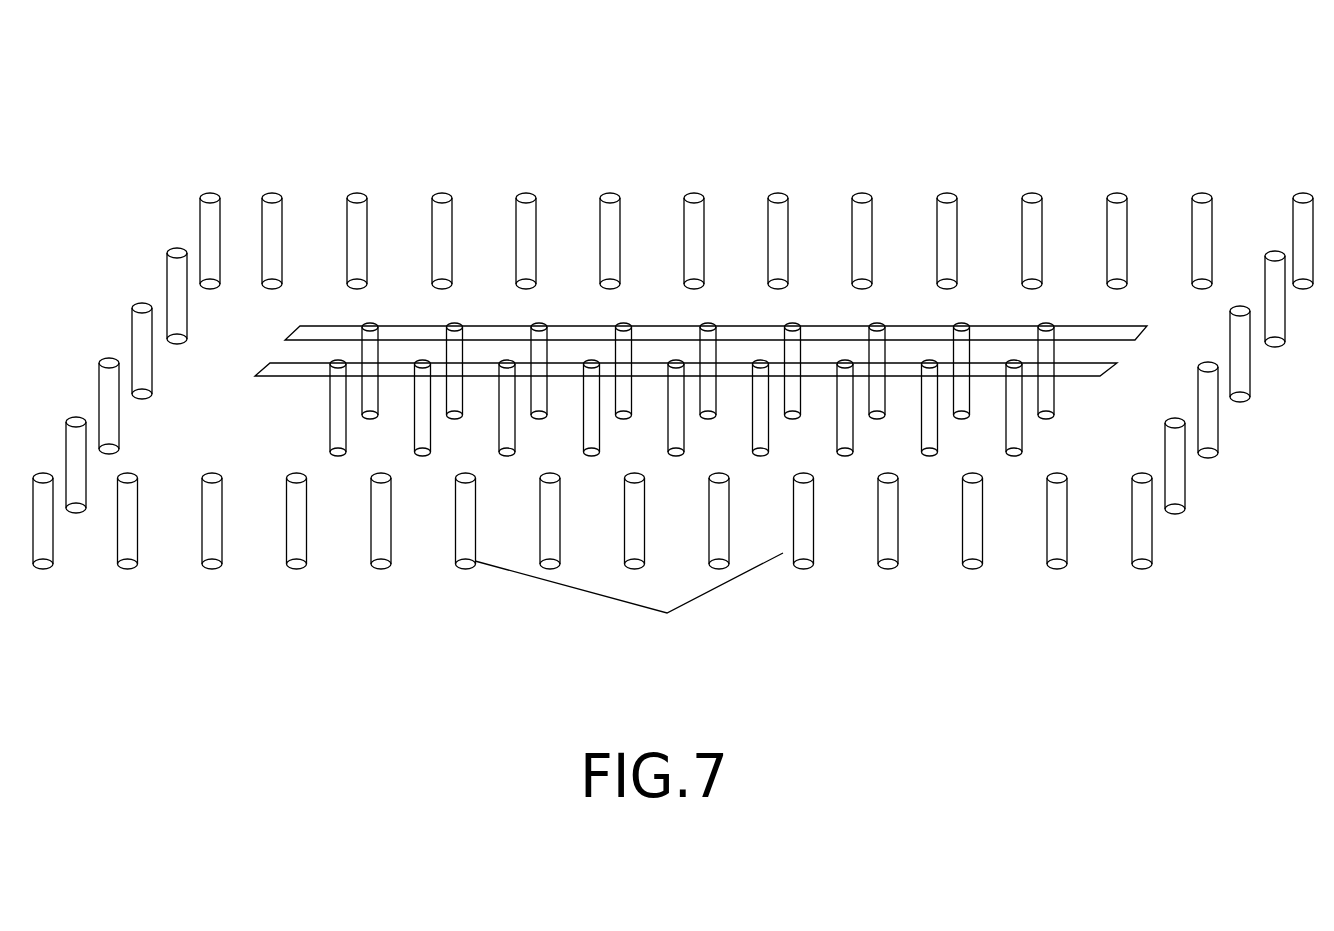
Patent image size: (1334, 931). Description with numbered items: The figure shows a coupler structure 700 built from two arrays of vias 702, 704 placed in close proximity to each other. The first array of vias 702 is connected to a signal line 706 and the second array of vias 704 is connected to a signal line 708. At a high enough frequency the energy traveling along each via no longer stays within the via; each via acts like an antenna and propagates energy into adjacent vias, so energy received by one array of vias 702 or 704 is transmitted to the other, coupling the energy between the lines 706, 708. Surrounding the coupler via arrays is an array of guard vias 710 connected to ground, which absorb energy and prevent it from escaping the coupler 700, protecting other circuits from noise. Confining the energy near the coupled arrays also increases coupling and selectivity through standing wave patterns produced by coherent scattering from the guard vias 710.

The coupler structure 700 is at (673, 386).
The array of vias 702 is at (1092, 350).
The array of vias 704 is at (1030, 441).
The signal line 706 is at (914, 327).
The signal line 708 is at (990, 376).
The guard vias 710 is at (250, 182).